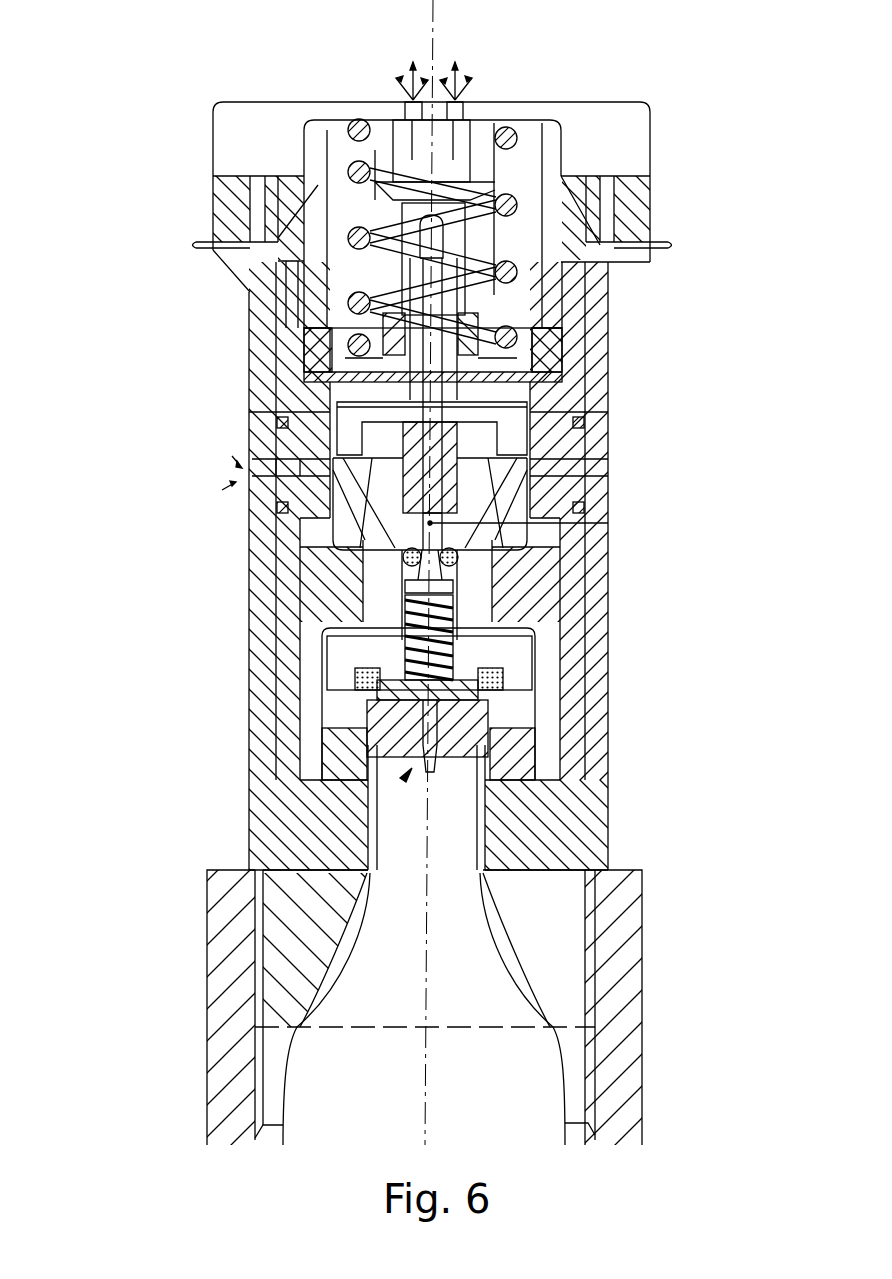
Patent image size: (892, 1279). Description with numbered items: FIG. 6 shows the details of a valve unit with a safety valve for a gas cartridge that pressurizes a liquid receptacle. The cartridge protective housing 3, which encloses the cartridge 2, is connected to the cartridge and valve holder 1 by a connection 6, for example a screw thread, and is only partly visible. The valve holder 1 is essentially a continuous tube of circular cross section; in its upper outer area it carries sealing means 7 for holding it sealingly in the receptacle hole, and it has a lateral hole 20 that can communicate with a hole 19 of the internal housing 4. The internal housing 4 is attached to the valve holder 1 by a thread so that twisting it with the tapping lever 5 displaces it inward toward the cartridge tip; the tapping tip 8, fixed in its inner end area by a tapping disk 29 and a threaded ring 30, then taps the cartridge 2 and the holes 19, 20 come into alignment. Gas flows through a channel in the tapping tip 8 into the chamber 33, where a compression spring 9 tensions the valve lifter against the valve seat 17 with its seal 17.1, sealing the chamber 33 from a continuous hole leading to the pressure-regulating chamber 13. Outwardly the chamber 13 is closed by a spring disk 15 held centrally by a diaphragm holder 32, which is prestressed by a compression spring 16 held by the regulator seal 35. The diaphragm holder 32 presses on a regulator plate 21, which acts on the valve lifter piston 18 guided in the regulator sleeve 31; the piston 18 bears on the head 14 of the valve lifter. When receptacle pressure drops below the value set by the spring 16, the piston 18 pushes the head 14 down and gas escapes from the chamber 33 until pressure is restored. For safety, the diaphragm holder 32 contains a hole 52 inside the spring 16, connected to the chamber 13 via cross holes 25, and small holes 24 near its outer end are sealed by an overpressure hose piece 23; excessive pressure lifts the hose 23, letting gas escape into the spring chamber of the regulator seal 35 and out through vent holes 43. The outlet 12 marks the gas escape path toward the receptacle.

The cartridge and valve holder 1 is at (592, 793).
The cartridge 2 is at (489, 1013).
The cartridge protective housing 3 is at (617, 932).
The internal housing 4 is at (290, 389).
The tapping lever 5 is at (620, 128).
The screw thread of valve holder/cartridge holder 6 is at (592, 885).
The outer sealing means 7 is at (205, 240).
The tapping tip 8 is at (441, 722).
The compression spring 9 is at (460, 618).
The valve outlet 12 is at (408, 775).
The pressure-regulating chamber 13 is at (520, 480).
The valve lifter head 14 is at (460, 567).
The spring disk 15 is at (478, 388).
The compression spring 16 is at (507, 142).
The sealing surface for valve lifter 17 is at (403, 558).
The seal 17.1 is at (406, 568).
The valve lifter 18 is at (482, 512).
The lateral hole in the internal housing 19 is at (306, 482).
The lateral hole in the valve holder 20 is at (262, 472).
The regulator plate 21 is at (518, 418).
The overpressure hose 23 is at (437, 258).
The holes 24 is at (340, 228).
The cross hole 25 is at (283, 414).
The tapping disk 29 is at (513, 698).
The threaded ring 30 is at (519, 749).
The regulator sleeve 31 is at (586, 506).
The diaphragm holder 32 is at (478, 363).
The pressure chamber 33 is at (410, 586).
The regulator seal 35 is at (570, 240).
The vent hole 43 is at (410, 112).
The hole 52 is at (480, 290).